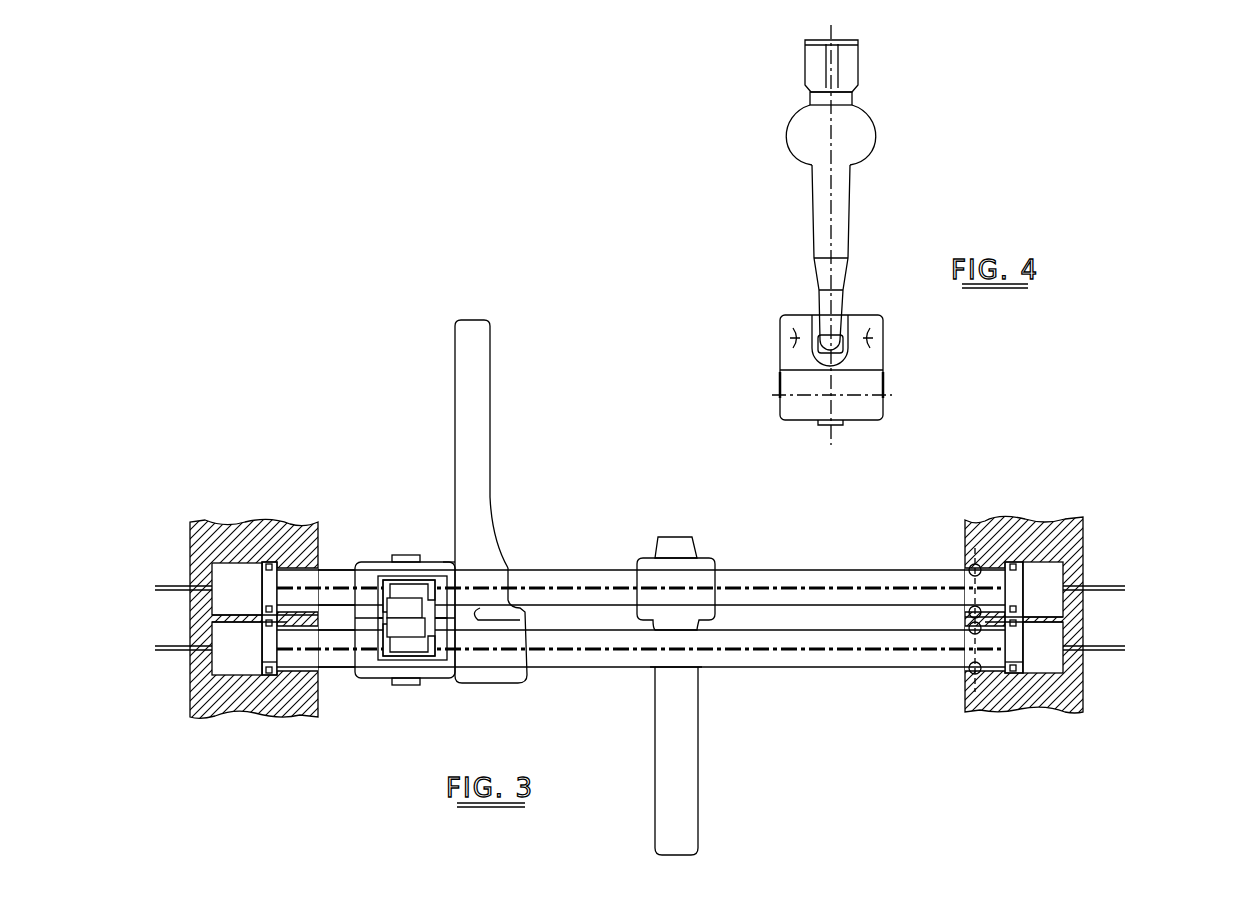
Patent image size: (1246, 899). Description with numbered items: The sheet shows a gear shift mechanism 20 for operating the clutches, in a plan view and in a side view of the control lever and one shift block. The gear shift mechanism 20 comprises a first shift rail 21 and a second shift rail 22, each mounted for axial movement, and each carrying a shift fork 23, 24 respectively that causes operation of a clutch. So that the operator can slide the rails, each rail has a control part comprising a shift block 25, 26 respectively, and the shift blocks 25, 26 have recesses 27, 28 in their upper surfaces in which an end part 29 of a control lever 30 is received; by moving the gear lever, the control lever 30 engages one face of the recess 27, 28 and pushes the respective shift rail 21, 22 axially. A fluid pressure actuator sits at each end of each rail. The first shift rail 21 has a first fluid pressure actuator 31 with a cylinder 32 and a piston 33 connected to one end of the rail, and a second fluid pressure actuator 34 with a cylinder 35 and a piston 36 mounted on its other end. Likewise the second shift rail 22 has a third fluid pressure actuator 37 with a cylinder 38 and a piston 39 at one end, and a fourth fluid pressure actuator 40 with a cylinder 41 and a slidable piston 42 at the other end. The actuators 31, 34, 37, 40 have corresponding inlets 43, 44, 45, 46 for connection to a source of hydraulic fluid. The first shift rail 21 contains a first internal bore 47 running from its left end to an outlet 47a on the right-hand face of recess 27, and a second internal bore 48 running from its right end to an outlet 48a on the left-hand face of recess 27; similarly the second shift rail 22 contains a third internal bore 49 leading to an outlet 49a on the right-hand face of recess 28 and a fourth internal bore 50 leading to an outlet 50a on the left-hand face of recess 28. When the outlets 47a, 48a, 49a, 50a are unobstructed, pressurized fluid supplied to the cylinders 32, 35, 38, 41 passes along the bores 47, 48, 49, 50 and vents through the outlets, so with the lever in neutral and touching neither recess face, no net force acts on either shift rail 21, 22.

In FIG. 3, the gear shift mechanism 20 is at (740, 553).
In FIG. 3, the first shift rail 21 is at (807, 578).
In FIG. 3, the second shift rail 22 is at (825, 660).
In FIG. 3, the shift fork 23 is at (463, 417).
In FIG. 3, the shift fork 24 is at (662, 793).
In FIG. 3, the shift block 25 is at (422, 560).
In FIG. 4, the shift block 25 is at (880, 357).
In FIG. 3, the shift block 26 is at (408, 662).
In FIG. 3, the recess 27 is at (383, 597).
In FIG. 4, the recess 27 is at (820, 317).
In FIG. 3, the recess 28 is at (392, 637).
In FIG. 4, the end part 29 is at (837, 340).
In FIG. 4, the control lever 30 is at (843, 190).
In FIG. 3, the first fluid pressure actuator 31 is at (180, 558).
In FIG. 3, the cylinder 32 is at (230, 565).
In FIG. 3, the piston 33 is at (265, 575).
In FIG. 3, the second fluid pressure actuator 34 is at (1087, 554).
In FIG. 3, the cylinder 35 is at (1048, 573).
In FIG. 3, the piston 36 is at (1020, 570).
In FIG. 3, the third fluid pressure actuator 37 is at (208, 705).
In FIG. 3, the cylinder 38 is at (223, 660).
In FIG. 3, the piston 39 is at (262, 668).
In FIG. 3, the fourth fluid pressure actuator 40 is at (1030, 697).
In FIG. 3, the cylinder 41 is at (1048, 663).
In FIG. 3, the piston 42 is at (1008, 663).
In FIG. 3, the inlet 43 is at (155, 587).
In FIG. 3, the inlet 44 is at (1125, 588).
In FIG. 3, the inlet 45 is at (155, 648).
In FIG. 3, the inlet 46 is at (1125, 648).
In FIG. 3, the first internal bore 47 is at (327, 570).
In FIG. 3, the outlet 47a is at (443, 558).
In FIG. 3, the second internal bore 48 is at (547, 570).
In FIG. 3, the outlet 48a is at (378, 606).
In FIG. 3, the third internal bore 49 is at (303, 655).
In FIG. 3, the outlet 49a is at (430, 653).
In FIG. 3, the fourth internal bore 50 is at (758, 655).
In FIG. 3, the outlet 50a is at (378, 622).